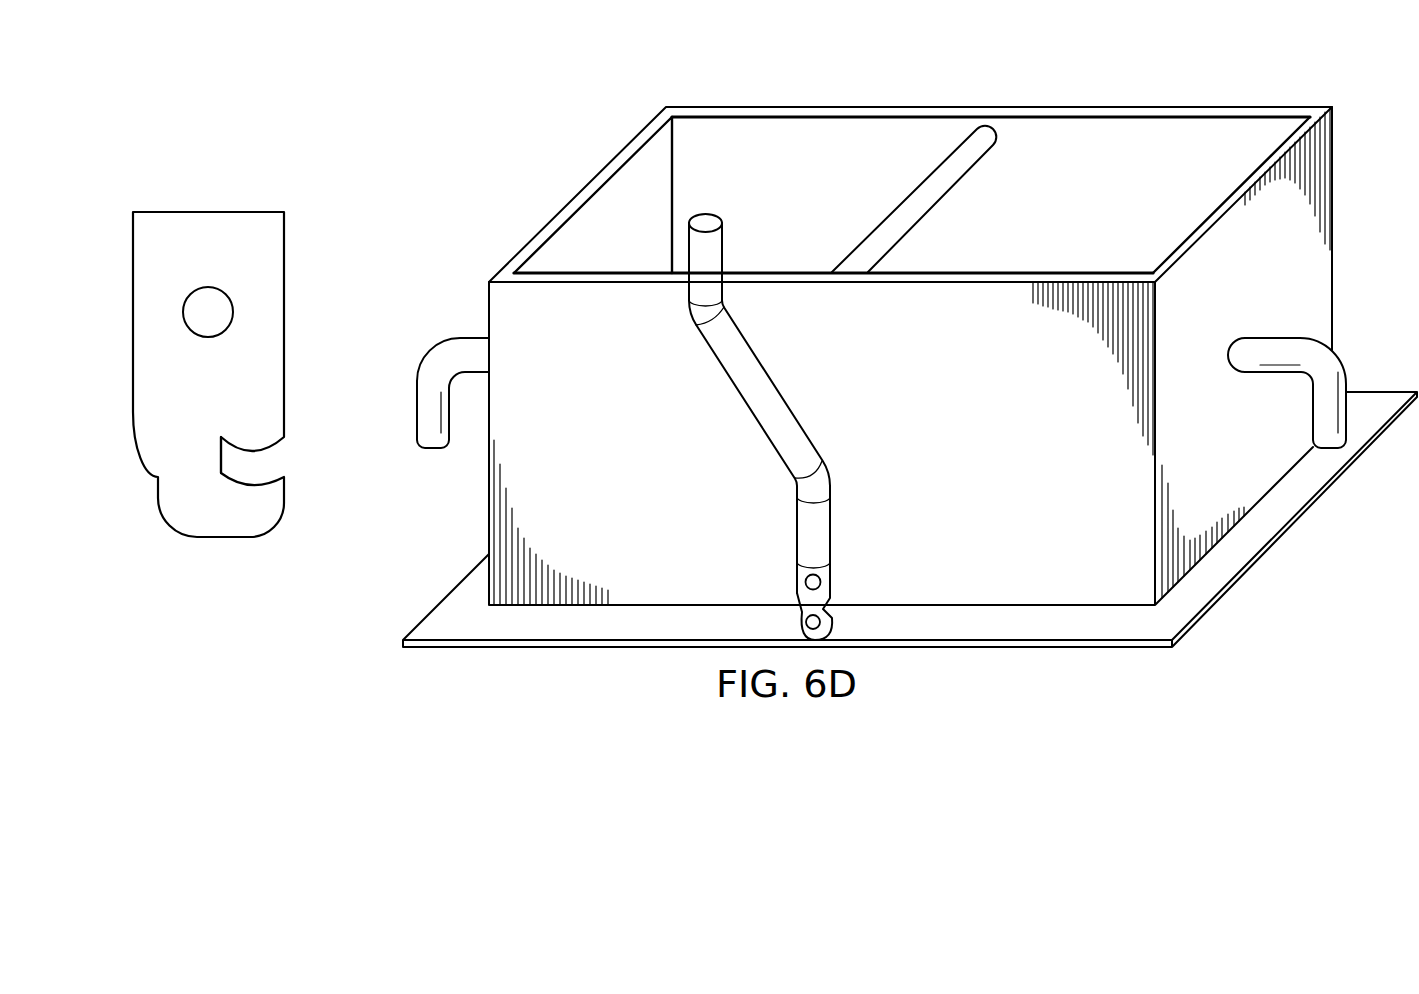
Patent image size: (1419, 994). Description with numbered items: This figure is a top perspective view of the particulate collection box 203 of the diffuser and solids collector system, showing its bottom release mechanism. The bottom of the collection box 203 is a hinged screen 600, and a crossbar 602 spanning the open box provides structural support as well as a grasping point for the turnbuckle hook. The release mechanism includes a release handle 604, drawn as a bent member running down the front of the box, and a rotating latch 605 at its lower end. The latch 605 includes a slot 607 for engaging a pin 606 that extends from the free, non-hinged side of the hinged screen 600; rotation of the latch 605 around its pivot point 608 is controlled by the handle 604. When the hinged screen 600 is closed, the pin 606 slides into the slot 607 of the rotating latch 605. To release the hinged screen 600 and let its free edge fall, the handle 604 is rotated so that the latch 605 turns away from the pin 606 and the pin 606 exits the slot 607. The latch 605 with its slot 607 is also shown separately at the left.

The particulate collection box 203 is at (1068, 103).
The hinged screen 600 is at (1240, 542).
The crossbar 602 is at (903, 200).
The release handle 604 is at (797, 366).
The rotating latch 605 is at (156, 207).
The pin 606 is at (823, 612).
The slot 607 is at (296, 456).
The pivot point 608 is at (805, 582).